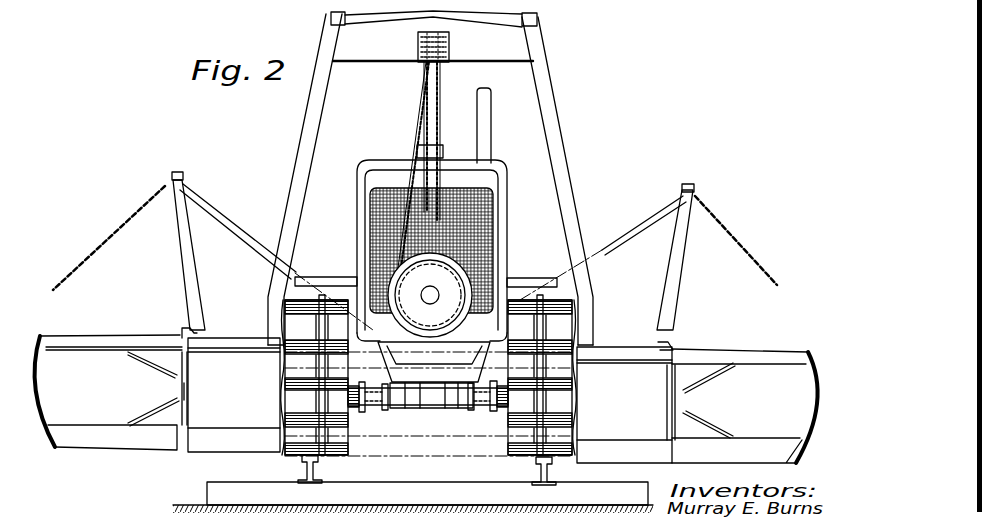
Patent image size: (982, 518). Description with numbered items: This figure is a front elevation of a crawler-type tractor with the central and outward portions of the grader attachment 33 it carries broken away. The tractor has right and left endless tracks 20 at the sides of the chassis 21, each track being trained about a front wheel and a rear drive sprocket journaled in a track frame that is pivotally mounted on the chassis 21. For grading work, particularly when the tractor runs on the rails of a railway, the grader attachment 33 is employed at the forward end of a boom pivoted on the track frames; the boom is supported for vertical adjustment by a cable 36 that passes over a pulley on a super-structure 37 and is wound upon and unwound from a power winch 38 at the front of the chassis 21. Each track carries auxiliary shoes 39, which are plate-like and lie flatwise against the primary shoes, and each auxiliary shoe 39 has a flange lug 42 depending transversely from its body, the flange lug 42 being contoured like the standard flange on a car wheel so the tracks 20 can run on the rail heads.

The endless tracks 20 is at (307, 300).
The chassis 21 is at (417, 357).
The grader attachment 33 is at (110, 343).
The cable 36 is at (425, 103).
The super-structure 37 is at (548, 106).
The power winch 38 is at (455, 265).
The auxiliary shoe 39 is at (277, 410).
The flange lug 42 is at (320, 440).